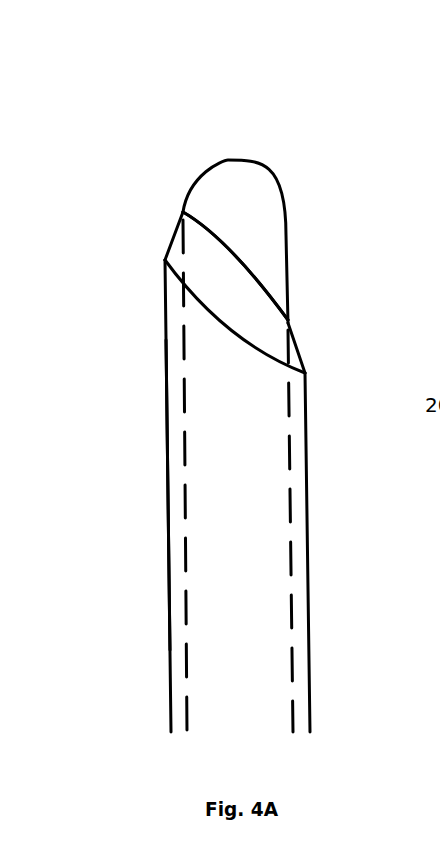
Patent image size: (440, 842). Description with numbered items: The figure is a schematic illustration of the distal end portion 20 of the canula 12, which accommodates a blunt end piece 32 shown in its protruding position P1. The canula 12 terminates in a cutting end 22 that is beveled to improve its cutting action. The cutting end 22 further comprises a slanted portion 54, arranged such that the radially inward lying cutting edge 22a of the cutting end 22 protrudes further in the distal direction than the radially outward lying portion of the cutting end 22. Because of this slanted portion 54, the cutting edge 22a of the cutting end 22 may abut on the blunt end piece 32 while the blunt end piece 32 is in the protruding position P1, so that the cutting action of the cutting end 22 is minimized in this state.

The distal end portion 20 is at (126, 374).
The blunt end piece 32 is at (284, 218).
The cutting edge 22a is at (183, 213).
The cutting end 22 is at (128, 207).
The slanted portion 54 is at (164, 238).
The canula 12 is at (169, 615).
The protruding position P1 is at (252, 126).